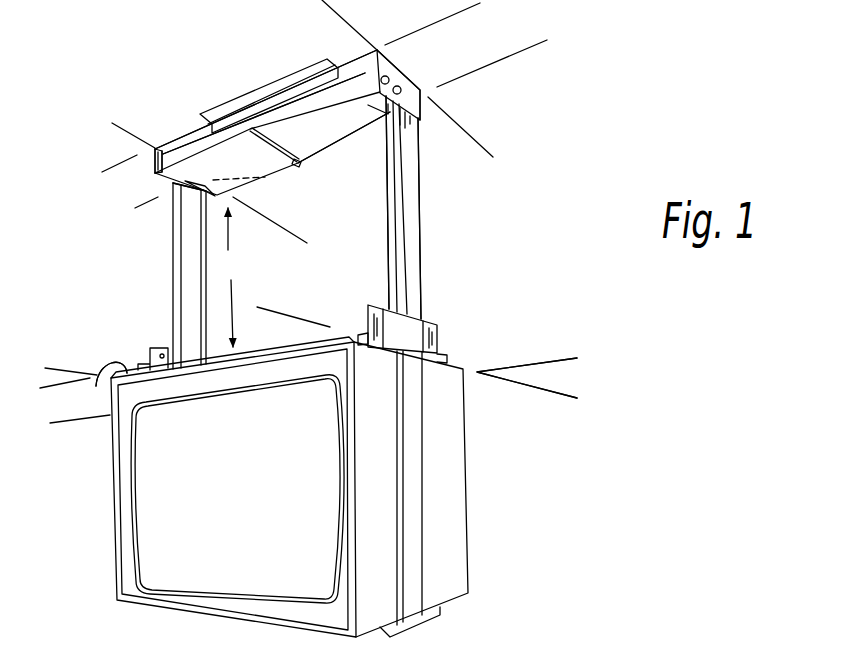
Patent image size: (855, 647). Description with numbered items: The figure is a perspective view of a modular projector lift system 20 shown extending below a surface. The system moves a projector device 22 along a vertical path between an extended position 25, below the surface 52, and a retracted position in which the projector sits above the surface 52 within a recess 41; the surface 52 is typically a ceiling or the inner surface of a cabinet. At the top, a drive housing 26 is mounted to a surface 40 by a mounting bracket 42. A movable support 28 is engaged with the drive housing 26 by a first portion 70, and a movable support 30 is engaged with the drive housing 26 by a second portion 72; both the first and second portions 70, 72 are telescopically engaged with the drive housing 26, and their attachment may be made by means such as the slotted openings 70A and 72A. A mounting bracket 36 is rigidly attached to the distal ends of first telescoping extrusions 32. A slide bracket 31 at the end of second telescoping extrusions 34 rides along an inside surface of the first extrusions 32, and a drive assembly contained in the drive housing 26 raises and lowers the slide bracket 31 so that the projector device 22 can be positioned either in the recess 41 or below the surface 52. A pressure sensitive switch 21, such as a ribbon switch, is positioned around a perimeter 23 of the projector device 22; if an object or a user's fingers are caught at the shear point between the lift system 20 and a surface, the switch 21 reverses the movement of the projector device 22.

The modular projector lift system 20 is at (530, 187).
The pressure sensitive switch 21 is at (96, 386).
The projector device 22 is at (244, 507).
The perimeter 23 is at (111, 374).
The extended position 25 is at (482, 494).
The drive housing 26 is at (279, 128).
The movable support 28 is at (420, 255).
The movable support 30 is at (173, 288).
The slide bracket 31 is at (415, 622).
The first telescoping extrusions 32 is at (178, 235).
The second telescoping extrusions 34 is at (413, 463).
The mounting bracket 36 is at (397, 337).
The surface 40 is at (485, 66).
The recess 41 is at (292, 277).
The mounting bracket 42 is at (256, 98).
The surface 52 is at (450, 317).
The first portion 70 is at (353, 127).
The slotted openings 70A is at (345, 78).
The second portion 72 is at (263, 163).
The slotted openings 72A is at (183, 148).